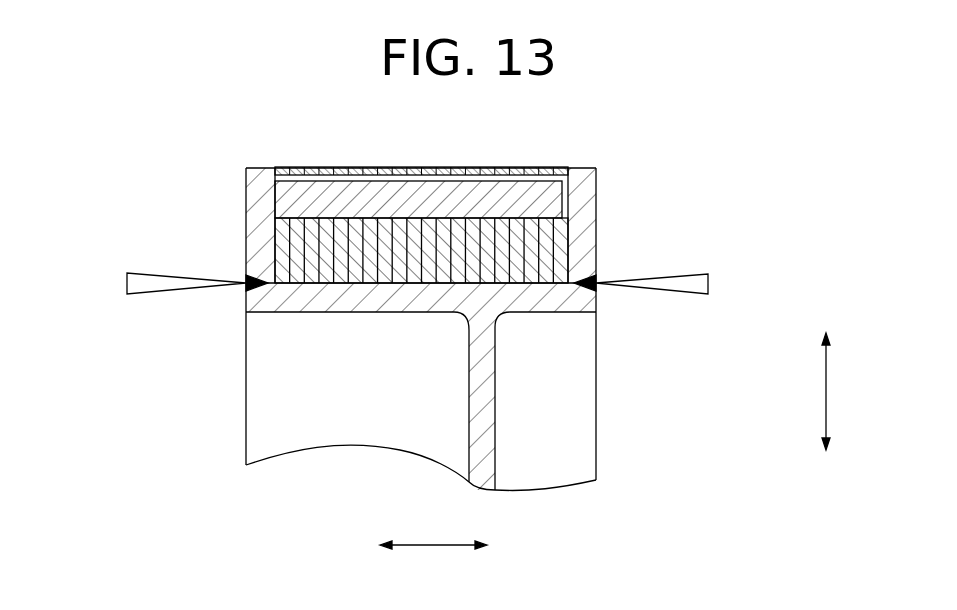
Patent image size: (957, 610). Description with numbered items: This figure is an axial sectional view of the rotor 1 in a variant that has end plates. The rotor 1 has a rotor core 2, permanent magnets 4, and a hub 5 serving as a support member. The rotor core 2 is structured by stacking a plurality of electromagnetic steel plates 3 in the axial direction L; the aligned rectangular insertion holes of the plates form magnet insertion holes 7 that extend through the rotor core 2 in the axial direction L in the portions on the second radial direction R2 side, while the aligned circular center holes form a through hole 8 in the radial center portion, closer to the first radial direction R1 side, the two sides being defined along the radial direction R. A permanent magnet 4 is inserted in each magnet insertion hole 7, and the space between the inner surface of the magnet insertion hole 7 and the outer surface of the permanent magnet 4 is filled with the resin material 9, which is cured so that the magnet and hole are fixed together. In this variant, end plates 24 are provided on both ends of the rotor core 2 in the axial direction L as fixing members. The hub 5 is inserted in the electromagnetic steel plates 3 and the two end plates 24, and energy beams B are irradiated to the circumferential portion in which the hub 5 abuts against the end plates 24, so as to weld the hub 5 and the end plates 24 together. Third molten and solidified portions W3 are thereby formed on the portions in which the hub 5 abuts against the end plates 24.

The rotor 1 is at (768, 150).
The rotor core 2 is at (268, 169).
The end plates 24 is at (246, 170).
The permanent magnets 4 is at (275, 197).
The resin material 9 is at (568, 182).
The electromagnetic steel plates 3 is at (560, 168).
The magnet insertion holes 7 is at (297, 215).
The through hole 8 is at (345, 283).
The hub 5 is at (495, 400).
The third molten and solidified portions W3 is at (245, 290).
The energy beams B is at (130, 282).
The radial direction R is at (841, 391).
The first radial direction R1 is at (826, 463).
The second radial direction R2 is at (826, 325).
The axial direction L is at (433, 529).